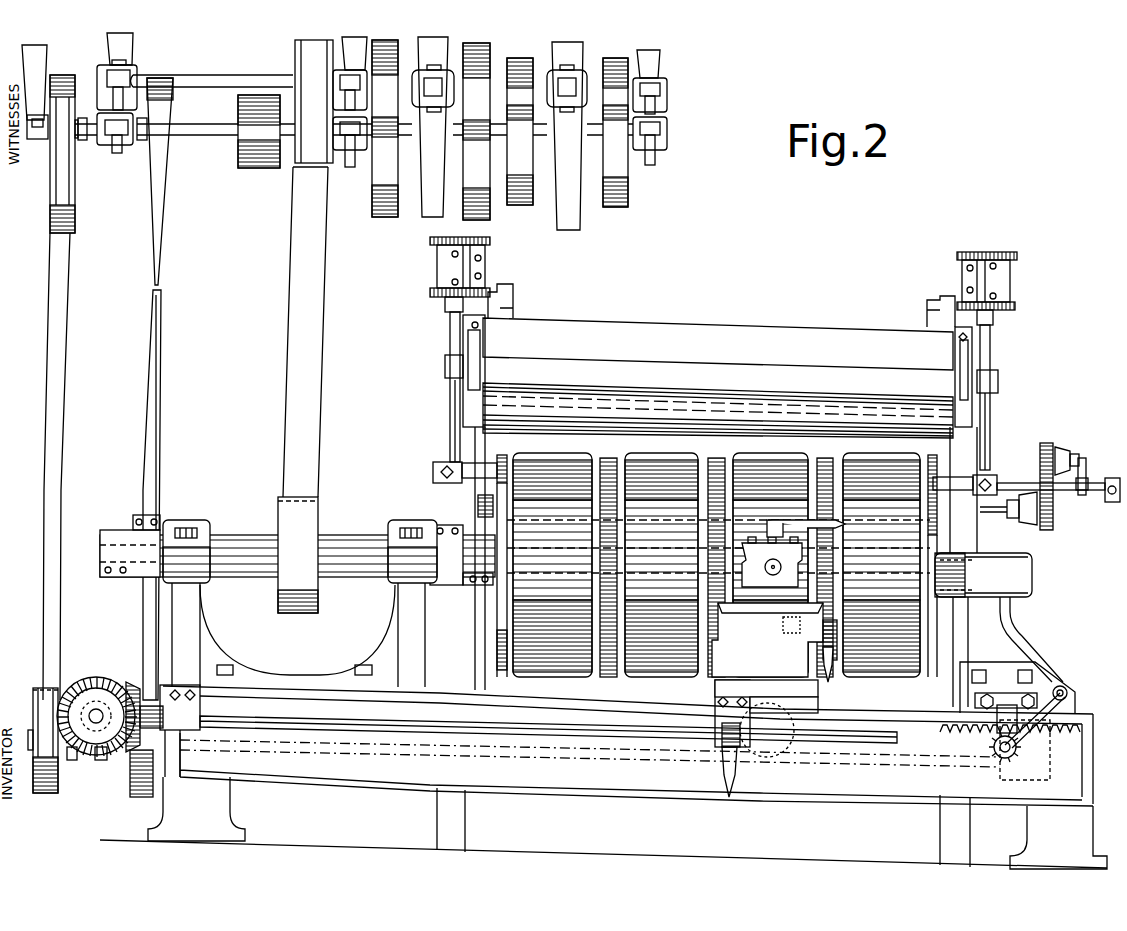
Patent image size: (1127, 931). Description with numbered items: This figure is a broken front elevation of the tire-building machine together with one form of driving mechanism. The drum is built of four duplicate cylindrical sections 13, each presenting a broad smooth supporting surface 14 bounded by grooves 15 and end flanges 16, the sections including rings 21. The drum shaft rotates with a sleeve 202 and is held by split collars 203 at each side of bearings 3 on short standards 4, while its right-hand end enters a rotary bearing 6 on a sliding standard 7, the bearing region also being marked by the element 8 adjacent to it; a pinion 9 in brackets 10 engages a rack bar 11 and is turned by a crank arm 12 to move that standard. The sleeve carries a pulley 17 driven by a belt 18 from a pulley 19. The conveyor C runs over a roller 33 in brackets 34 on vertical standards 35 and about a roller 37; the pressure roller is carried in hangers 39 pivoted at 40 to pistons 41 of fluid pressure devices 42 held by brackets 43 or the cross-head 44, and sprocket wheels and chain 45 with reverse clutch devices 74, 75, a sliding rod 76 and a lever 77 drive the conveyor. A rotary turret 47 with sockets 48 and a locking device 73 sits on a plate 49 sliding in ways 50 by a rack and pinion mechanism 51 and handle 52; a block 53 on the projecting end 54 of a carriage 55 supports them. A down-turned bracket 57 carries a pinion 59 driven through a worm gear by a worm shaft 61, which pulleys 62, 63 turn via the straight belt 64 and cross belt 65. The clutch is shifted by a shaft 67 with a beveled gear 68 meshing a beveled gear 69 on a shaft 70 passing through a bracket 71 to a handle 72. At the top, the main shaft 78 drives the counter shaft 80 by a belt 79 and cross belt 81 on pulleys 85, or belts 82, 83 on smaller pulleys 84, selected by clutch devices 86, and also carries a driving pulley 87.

The bearings 3 is at (200, 580).
The short standards 4 is at (298, 635).
The rotary bearing 6 is at (965, 577).
The standard 7 is at (1017, 655).
The bearing 8 is at (1032, 580).
The pinion 9 is at (997, 755).
The brackets 10 is at (1005, 705).
The rack bar 11 is at (945, 732).
The crank arm 12 is at (1030, 750).
The cylindrical sections 13 is at (718, 535).
The supporting surface 14 is at (560, 449).
The grooves 15 is at (603, 458).
The flanges 16 is at (720, 555).
The pulley 17 is at (278, 508).
The belt 18 is at (288, 392).
The pulley 19 is at (296, 58).
The rings 21 is at (600, 670).
The roller 33 is at (475, 430).
The brackets 34 is at (485, 350).
The vertical standards 35 is at (435, 493).
The roller 37 is at (478, 505).
The hangers 39 is at (450, 412).
The pivotal connection 40 is at (445, 365).
The pistons 41 is at (450, 322).
The fluid pressure devices 42 is at (437, 268).
The brackets 43 is at (513, 304).
The cross-head 44 is at (718, 344).
The sprocket wheels and chain 45 is at (1040, 450).
The rotary turret 47 is at (742, 558).
The sockets 48 is at (781, 567).
The plate 49 is at (770, 611).
The ways 50 is at (755, 617).
The rack and pinion mechanism 51 is at (788, 636).
The handle 52 is at (832, 670).
The block 53 is at (715, 682).
The projecting end 54 is at (766, 689).
The carriage 55 is at (805, 710).
The down-turned bracket 57 is at (813, 762).
The pinion 59 is at (775, 757).
The worm shaft 61 is at (600, 760).
The pulley 62 is at (36, 688).
The pulley 63 is at (130, 790).
The straight belt 64 is at (45, 413).
The cross belt 65 is at (156, 392).
The shaft 67 is at (97, 709).
The beveled gear 68 is at (78, 683).
The beveled gear 69 is at (130, 683).
The shaft 70 is at (328, 730).
The bracket 71 is at (700, 716).
The handle 72 is at (728, 797).
The locking device 73 is at (788, 528).
The reverse clutch device 74 is at (1065, 447).
The reverse clutch device 75 is at (1022, 522).
The sliding rod 76 is at (1090, 490).
The lever 77 is at (1110, 503).
The main shaft 78 is at (208, 136).
The belt 79 is at (378, 193).
The counter shaft 80 is at (208, 82).
The cross belt 81 is at (458, 185).
The belt 82 is at (518, 205).
The belt 83 is at (612, 207).
The pulleys 84 is at (545, 180).
The pulleys 85 is at (372, 212).
The clutch devices 86 is at (437, 107).
The driving pulley 87 is at (256, 163).
The sleeve 202 is at (345, 545).
The split collars 203 is at (135, 532).
The conveyor C is at (718, 410).